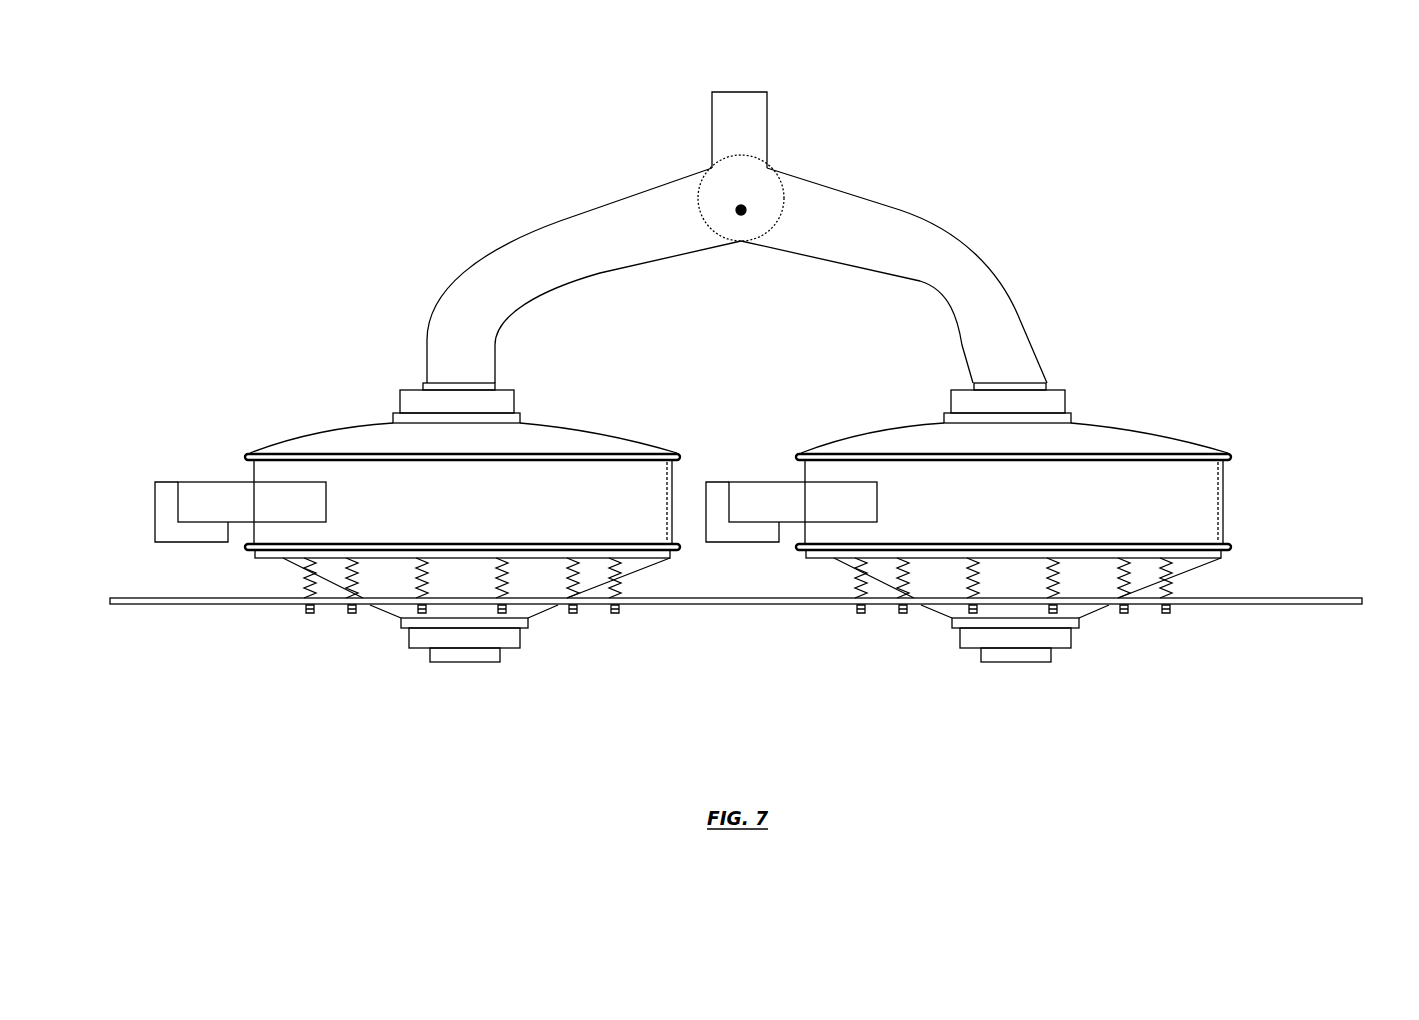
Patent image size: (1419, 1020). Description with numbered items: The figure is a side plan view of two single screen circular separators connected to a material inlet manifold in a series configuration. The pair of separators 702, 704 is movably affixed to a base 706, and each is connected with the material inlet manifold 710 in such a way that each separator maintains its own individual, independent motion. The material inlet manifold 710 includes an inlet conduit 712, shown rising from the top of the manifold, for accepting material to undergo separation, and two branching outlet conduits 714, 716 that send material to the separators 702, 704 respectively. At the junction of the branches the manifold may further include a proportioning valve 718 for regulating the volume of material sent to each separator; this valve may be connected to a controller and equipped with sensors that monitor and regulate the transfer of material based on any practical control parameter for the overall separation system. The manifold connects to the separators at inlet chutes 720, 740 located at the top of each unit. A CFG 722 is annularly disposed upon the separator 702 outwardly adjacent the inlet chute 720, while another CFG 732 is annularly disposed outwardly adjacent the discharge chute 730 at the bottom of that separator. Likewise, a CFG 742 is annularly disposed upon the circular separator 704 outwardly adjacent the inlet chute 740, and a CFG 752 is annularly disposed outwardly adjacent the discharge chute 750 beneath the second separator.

The separator 702 is at (308, 431).
The separator 704 is at (1021, 525).
The base 706 is at (1207, 598).
The material inlet manifold 710 is at (784, 153).
The inlet conduit 712 is at (705, 130).
The outlet conduit 714 is at (593, 202).
The outlet conduit 716 is at (919, 212).
The proportioning valve 718 is at (742, 217).
The inlet chute 720 is at (419, 382).
The CFG 722 is at (516, 386).
The discharge chute 730 is at (431, 668).
The CFG 732 is at (526, 648).
The inlet chute 740 is at (944, 370).
The CFG 742 is at (1106, 388).
The discharge chute 750 is at (964, 673).
The CFG 752 is at (1119, 648).